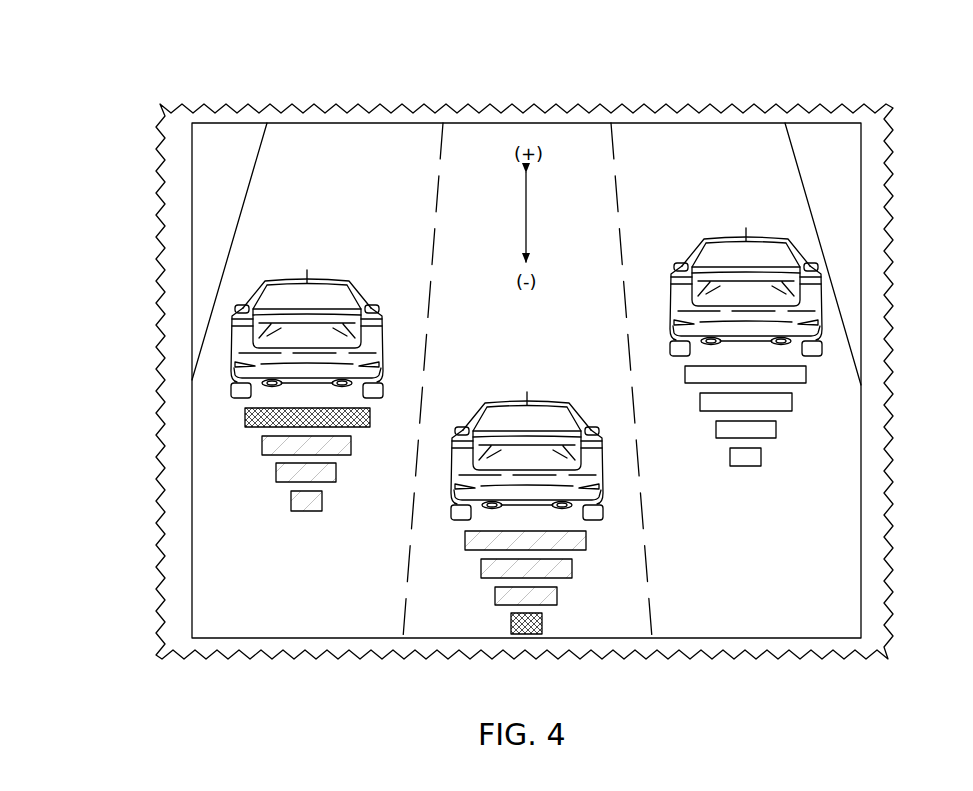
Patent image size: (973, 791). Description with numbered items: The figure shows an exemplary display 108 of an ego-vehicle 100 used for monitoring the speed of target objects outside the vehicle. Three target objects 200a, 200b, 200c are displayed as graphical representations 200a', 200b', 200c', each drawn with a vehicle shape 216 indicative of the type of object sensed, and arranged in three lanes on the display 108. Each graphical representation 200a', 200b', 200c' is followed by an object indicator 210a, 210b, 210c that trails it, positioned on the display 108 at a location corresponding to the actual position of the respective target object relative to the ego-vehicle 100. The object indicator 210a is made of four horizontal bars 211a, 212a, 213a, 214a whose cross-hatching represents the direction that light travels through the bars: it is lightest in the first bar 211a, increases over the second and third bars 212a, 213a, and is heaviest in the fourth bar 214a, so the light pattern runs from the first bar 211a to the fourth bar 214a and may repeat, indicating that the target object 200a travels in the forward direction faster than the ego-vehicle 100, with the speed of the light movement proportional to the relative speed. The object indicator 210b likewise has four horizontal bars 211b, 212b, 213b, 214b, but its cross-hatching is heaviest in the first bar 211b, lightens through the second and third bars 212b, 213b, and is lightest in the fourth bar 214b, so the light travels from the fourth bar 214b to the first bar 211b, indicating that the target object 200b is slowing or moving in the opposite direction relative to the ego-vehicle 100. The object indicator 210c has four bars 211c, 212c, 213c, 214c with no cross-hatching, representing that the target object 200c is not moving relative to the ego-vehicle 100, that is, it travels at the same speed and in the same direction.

The ego-vehicle 100 is at (870, 105).
The display 108 is at (863, 177).
The shape 216 is at (832, 295).
The target object 200a is at (312, 290).
The graphical representation 200a' is at (292, 256).
The target object 200b is at (527, 415).
The graphical representation 200b' is at (502, 380).
The target object 200c is at (737, 252).
The graphical representation 200c' is at (761, 214).
The object indicator 210a is at (254, 488).
The first bar 211a is at (306, 511).
The second bar 212a is at (276, 474).
The third bar 213a is at (351, 445).
The fourth bar 214a is at (245, 416).
The object indicator 210b is at (530, 579).
The first bar 211b is at (511, 625).
The second bar 212b is at (495, 597).
The third bar 213b is at (572, 568).
The fourth bar 214b is at (465, 540).
The object indicator 210c is at (759, 442).
The first bar 211c is at (745, 467).
The second bar 212c is at (718, 439).
The third bar 213c is at (792, 401).
The fourth bar 214c is at (692, 384).